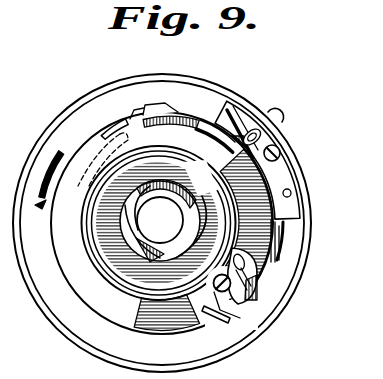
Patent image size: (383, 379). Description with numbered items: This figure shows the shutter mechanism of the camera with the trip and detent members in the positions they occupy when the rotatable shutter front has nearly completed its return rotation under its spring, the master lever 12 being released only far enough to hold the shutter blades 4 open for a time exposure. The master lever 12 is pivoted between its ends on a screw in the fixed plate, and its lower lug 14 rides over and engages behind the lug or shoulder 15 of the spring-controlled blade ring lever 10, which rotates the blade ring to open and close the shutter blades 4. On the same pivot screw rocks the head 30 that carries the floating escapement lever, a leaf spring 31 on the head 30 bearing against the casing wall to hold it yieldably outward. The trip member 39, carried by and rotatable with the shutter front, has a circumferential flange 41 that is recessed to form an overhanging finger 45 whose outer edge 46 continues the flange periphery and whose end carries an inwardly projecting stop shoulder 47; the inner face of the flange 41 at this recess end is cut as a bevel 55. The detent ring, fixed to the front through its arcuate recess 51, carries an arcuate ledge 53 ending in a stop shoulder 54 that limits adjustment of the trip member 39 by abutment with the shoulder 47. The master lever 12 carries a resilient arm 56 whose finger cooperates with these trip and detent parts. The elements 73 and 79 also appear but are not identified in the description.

The shutter blades 4 is at (185, 197).
The blade ring lever 10 is at (253, 293).
The master lever 12 is at (282, 232).
The lug 14 is at (207, 310).
The lug or shoulder 15 is at (230, 316).
The head 30 is at (285, 177).
The leaf spring 31 is at (233, 114).
The trip member 39 is at (75, 267).
The circumferential flange 41 is at (97, 302).
The overhanging finger 45 is at (138, 114).
The outer edge 46 is at (123, 115).
The stop shoulder 47 is at (207, 114).
The arcuate recess 51 is at (212, 116).
The arcuate flange or ledge 53 is at (223, 113).
The stop shoulder 54 is at (178, 112).
The bevel 55 is at (102, 157).
The arm 56 is at (277, 117).
The screw 73 is at (280, 155).
The pin 79 is at (285, 132).